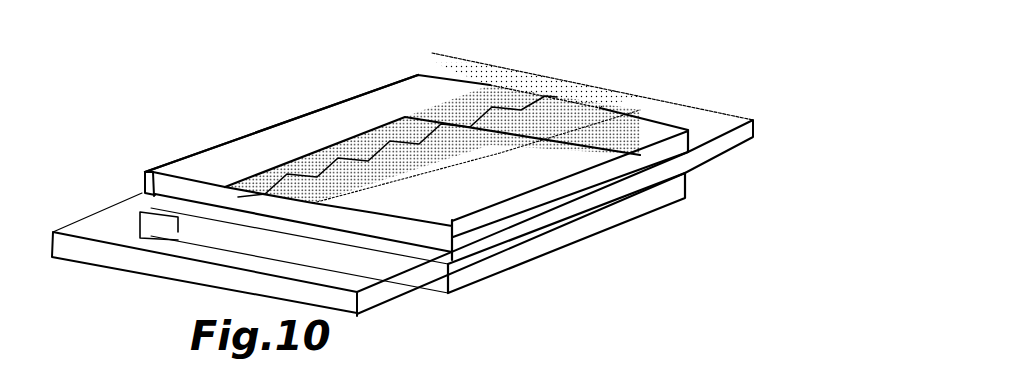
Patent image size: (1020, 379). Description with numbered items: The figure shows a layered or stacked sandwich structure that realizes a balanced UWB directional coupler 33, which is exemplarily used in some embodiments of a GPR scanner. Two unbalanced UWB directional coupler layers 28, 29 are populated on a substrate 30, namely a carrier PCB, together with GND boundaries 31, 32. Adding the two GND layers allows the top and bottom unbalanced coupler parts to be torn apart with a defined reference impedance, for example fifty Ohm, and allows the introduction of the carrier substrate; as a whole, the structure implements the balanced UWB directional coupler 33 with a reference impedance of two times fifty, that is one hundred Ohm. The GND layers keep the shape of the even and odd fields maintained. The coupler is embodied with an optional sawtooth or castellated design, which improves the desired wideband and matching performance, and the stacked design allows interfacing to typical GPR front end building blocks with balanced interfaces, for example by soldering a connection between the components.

The unbalanced UWB directional coupler layer 28 is at (643, 127).
The unbalanced UWB directional coupler layer 29 is at (642, 200).
The substrate 30 is at (728, 140).
The GND boundary 31 is at (150, 171).
The GND boundary 32 is at (180, 215).
The balanced UWB directional coupler 33 is at (266, 105).